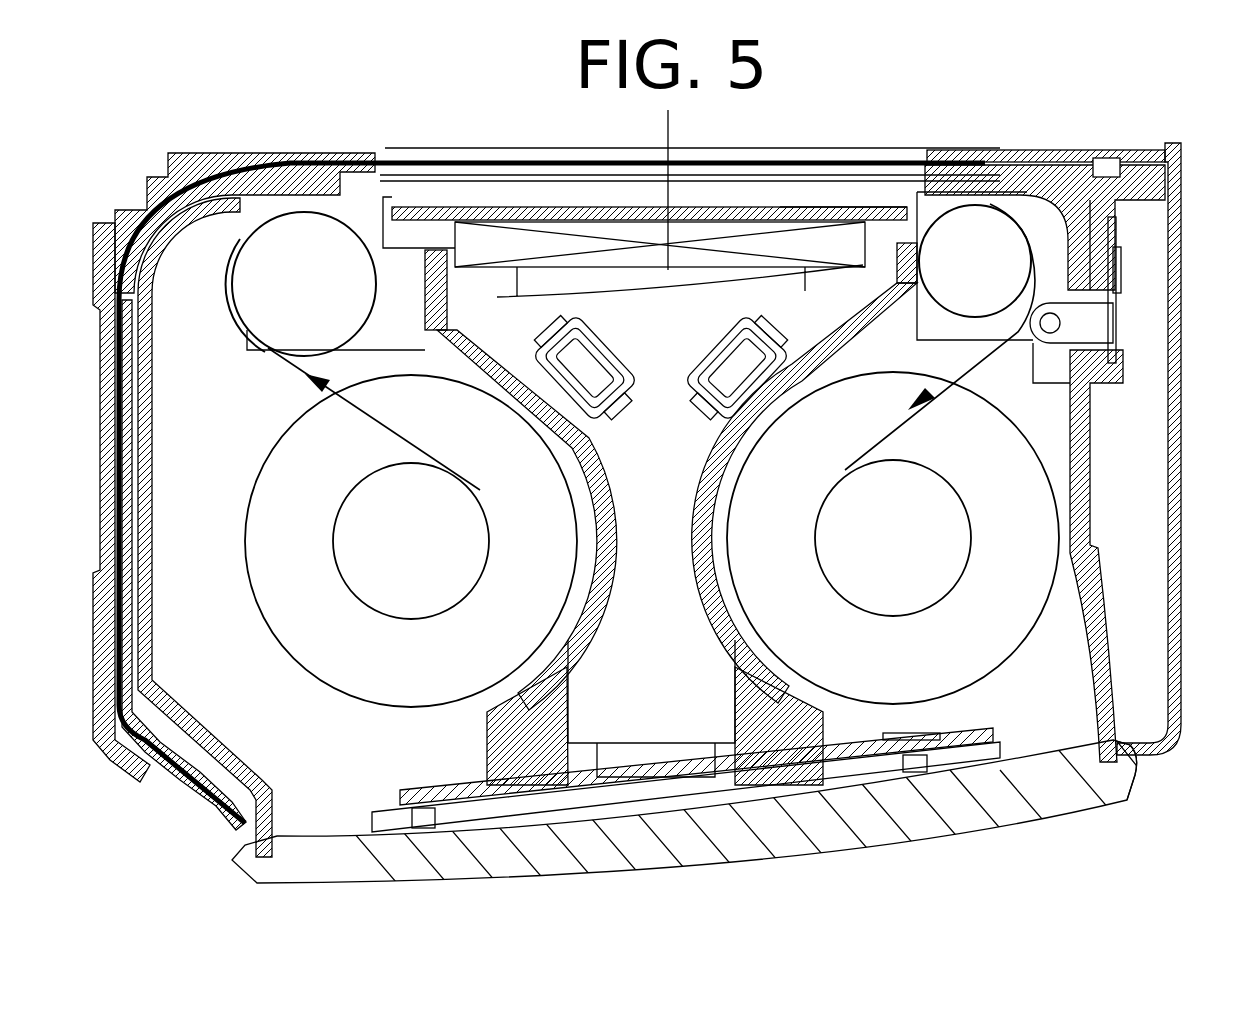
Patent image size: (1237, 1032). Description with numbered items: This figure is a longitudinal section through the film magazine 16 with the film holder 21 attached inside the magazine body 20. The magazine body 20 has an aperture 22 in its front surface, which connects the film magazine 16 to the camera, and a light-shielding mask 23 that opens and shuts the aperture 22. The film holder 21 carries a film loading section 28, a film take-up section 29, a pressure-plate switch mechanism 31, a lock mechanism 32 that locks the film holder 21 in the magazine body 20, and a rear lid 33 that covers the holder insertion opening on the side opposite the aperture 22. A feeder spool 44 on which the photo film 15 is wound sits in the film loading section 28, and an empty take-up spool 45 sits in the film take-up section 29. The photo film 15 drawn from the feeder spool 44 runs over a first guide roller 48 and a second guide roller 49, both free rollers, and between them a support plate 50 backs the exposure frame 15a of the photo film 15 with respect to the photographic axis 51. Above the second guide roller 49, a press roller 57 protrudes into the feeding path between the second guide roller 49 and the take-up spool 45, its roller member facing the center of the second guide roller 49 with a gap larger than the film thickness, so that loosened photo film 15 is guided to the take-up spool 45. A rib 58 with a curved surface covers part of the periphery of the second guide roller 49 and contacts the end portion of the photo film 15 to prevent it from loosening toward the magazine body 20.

The photo film 15 is at (1013, 310).
The exposure frame 15a is at (843, 202).
The film magazine 16 is at (1230, 818).
The magazine body 20 is at (1180, 742).
The film holder 21 is at (1112, 812).
The aperture 22 is at (395, 163).
The light-shielding mask 23 is at (475, 166).
The film loading section 28 is at (268, 680).
The film take-up section 29 is at (1055, 625).
The pressure-plate switch mechanism 31 is at (647, 257).
The lock mechanism 32 is at (653, 793).
The rear lid 33 is at (1010, 807).
The feeder spool 44 is at (383, 552).
The take-up spool 45 is at (937, 563).
The first guide roller 48 is at (257, 250).
The second guide roller 49 is at (943, 293).
The support plate 50 is at (537, 205).
The photographic axis 51 is at (672, 128).
The press roller 57 is at (1027, 333).
The rib 58 is at (1018, 238).